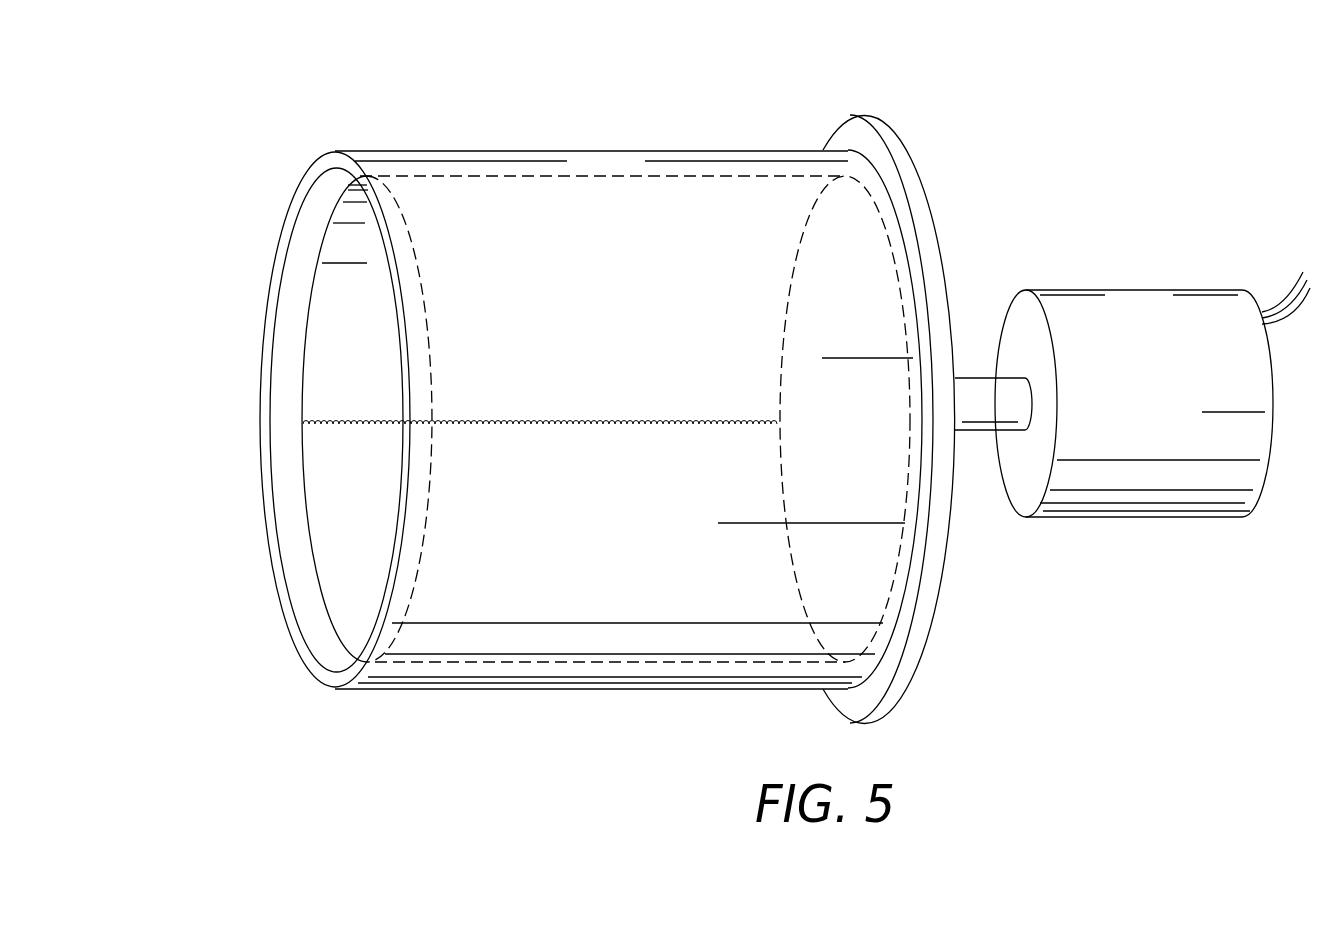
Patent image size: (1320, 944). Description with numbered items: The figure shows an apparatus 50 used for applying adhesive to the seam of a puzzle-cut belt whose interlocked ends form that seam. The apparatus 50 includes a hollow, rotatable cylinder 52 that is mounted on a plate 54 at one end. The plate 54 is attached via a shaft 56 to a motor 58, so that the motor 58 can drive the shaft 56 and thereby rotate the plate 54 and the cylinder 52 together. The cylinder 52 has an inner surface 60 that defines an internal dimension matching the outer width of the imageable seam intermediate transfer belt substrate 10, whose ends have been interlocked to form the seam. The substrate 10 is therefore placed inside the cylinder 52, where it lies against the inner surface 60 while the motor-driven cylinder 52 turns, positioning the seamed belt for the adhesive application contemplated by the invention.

The imageable seam intermediate transfer belt substrate 10 is at (333, 322).
The apparatus 50 is at (747, 377).
The cylinder 52 is at (315, 165).
The plate 54 is at (893, 133).
The shaft 56 is at (973, 392).
The motor 58 is at (1138, 325).
The inner surface 60 is at (293, 535).